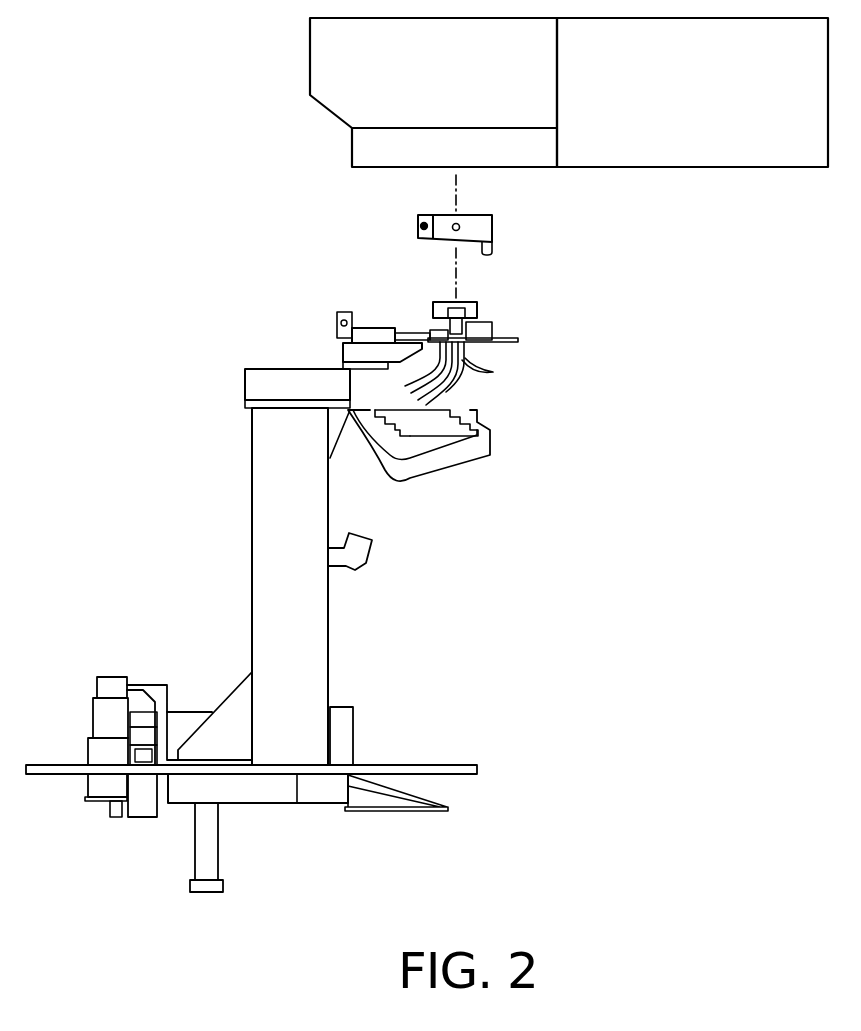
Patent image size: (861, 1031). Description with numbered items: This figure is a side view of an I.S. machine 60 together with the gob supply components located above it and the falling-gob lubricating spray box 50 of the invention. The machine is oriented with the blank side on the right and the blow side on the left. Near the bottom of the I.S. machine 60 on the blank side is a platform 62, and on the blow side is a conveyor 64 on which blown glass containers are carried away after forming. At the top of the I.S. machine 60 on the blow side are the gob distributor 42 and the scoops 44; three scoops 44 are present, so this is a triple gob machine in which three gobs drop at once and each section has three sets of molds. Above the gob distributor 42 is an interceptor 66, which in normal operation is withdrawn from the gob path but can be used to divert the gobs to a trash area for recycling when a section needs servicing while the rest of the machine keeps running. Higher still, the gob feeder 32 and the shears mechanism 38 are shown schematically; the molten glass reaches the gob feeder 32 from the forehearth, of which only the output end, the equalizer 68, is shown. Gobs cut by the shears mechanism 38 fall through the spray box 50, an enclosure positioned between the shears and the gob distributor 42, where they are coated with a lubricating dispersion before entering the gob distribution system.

The gob feeder 32 is at (310, 60).
The shears mechanism 38 is at (352, 143).
The equalizer 68 is at (695, 167).
The spray box 50 is at (494, 232).
The interceptor 66 is at (478, 307).
The gob distributor 42 is at (492, 330).
The scoops 44 is at (472, 372).
The I.S. machine 60 is at (258, 808).
The platform 62 is at (456, 765).
The conveyor 64 is at (152, 684).